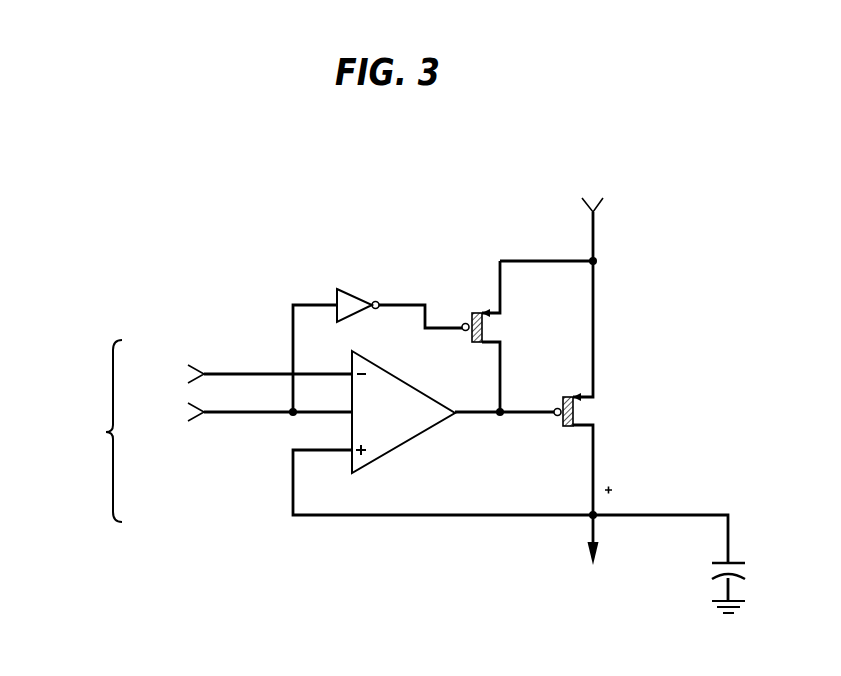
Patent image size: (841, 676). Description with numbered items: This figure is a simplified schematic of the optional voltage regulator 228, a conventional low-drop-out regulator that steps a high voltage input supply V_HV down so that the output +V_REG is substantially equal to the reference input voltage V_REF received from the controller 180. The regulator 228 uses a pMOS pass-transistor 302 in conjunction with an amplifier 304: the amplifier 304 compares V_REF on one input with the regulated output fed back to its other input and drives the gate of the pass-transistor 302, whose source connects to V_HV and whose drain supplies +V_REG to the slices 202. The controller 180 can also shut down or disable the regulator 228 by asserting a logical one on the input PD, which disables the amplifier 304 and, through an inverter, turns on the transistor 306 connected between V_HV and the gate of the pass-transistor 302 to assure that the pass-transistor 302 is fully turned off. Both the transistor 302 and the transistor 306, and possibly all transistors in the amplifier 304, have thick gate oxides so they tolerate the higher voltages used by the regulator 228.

The voltage regulator 228 is at (408, 122).
The controller 180 is at (65, 466).
The amplifier 304 is at (408, 442).
The transistor 306 is at (500, 328).
The pMOS pass-transistor 302 is at (593, 413).
The slices 202 is at (591, 597).